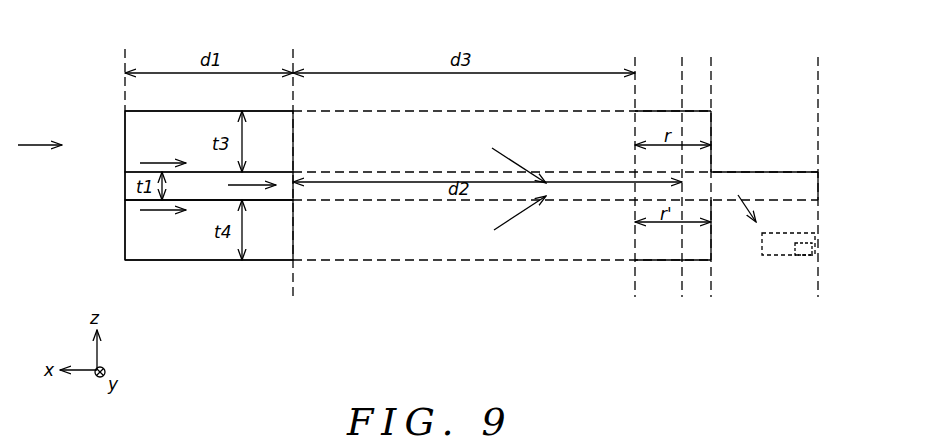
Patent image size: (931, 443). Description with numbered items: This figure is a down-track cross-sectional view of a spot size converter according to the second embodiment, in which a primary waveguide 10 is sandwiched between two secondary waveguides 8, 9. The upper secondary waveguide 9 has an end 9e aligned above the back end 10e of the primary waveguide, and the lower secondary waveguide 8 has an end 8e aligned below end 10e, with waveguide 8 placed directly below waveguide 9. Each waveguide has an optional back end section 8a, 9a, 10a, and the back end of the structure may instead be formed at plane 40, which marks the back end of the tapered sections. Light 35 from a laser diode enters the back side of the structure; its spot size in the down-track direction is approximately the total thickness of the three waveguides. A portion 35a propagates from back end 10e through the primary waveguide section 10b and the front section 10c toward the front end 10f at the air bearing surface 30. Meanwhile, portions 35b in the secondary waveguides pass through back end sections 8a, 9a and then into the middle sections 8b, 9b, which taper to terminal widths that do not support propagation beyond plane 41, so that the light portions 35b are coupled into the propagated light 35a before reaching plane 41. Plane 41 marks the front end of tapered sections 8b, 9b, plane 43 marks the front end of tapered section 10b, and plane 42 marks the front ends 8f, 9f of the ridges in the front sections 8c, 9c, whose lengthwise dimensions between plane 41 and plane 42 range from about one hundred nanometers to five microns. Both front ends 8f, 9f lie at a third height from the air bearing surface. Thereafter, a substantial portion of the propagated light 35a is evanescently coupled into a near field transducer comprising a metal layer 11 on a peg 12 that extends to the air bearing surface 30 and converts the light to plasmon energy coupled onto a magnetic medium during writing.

The secondary waveguide 8 is at (121, 258).
The back end section of waveguide 8 8a is at (176, 258).
The middle section of waveguide 8 8b is at (372, 247).
The front section (ridge) of waveguide 8 8c is at (667, 245).
The end of waveguide 8 8e is at (124, 240).
The front end of ridge 8c 8f is at (711, 224).
The secondary waveguide 9 is at (121, 112).
The back end section of waveguide 9 9a is at (176, 121).
The middle section of waveguide 9 9b is at (347, 130).
The front section (ridge) of waveguide 9 9c is at (668, 125).
The end of waveguide 9 9e is at (124, 122).
The front end of ridge 9c 9f is at (712, 127).
The primary waveguide 10 is at (121, 187).
The back end section of primary waveguide 10a is at (232, 194).
The primary waveguide section 10b is at (444, 189).
The front section of primary waveguide 10c is at (785, 190).
The back end of primary waveguide 10e is at (124, 178).
The front end of primary waveguide 10f is at (818, 184).
The metal layer 11 is at (798, 248).
The peg 12 is at (812, 250).
The ABS 30 is at (816, 181).
The light 35 is at (40, 133).
The propagated light portion 35a is at (487, 198).
The light portions in secondary waveguides 35b is at (343, 186).
The plane 40- 40 is at (214, 181).
The plane 41- 41 is at (627, 181).
The plane 42- 42 is at (711, 181).
The plane 43- 43 is at (681, 181).